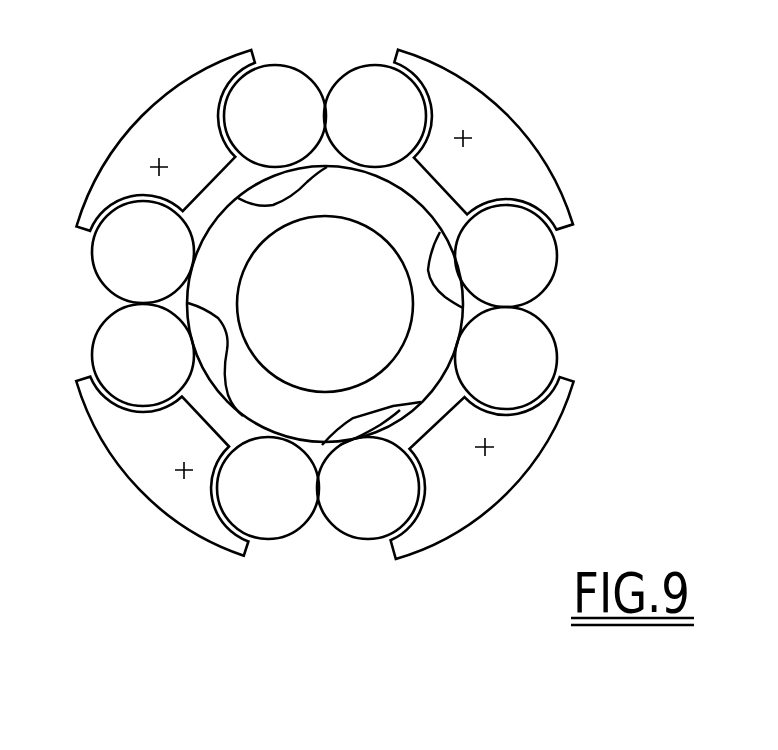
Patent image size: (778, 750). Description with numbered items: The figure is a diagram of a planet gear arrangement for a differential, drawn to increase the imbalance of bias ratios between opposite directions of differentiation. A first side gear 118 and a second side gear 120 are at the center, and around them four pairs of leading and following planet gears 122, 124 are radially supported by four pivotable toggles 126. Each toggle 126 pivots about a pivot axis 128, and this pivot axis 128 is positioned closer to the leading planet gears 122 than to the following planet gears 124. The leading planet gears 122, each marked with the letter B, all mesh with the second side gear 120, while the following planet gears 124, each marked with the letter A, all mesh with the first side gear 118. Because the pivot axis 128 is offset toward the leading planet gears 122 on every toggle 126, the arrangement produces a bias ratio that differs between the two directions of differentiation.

The first side gear 118 is at (213, 346).
The second side gear 120 is at (233, 245).
The leading planet gears 122 is at (370, 66).
The following planet gears 124 is at (285, 66).
The pivotable toggles 126 is at (155, 120).
The pivot axis 128 is at (152, 167).